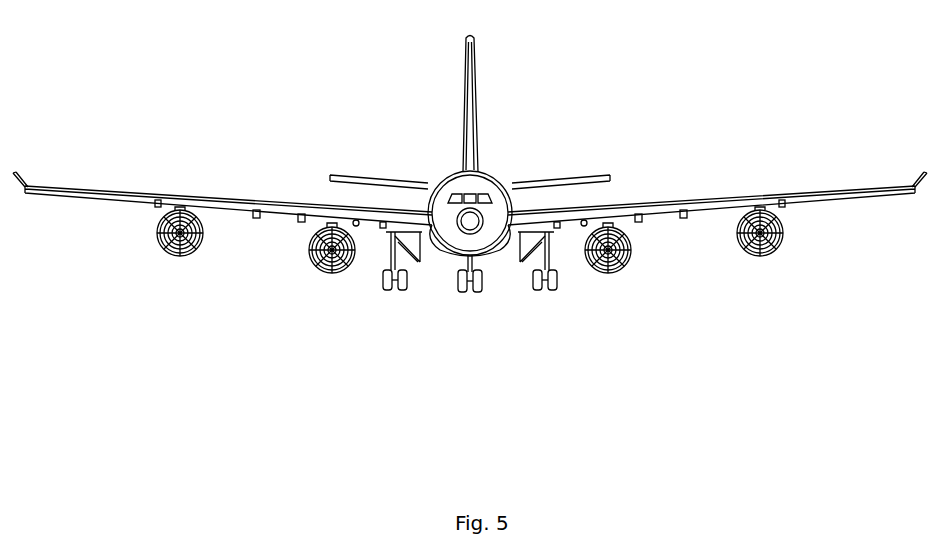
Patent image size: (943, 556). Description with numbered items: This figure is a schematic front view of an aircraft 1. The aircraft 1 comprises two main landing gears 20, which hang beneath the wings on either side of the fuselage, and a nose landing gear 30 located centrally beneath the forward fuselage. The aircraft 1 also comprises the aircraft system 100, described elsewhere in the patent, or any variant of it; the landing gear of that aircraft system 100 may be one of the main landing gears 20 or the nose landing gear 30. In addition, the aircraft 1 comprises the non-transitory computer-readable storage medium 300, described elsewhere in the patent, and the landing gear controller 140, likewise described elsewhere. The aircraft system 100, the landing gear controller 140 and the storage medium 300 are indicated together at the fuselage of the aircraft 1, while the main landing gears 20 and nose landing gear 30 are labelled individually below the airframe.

The aircraft 1 is at (470, 214).
The aircraft system 100 is at (412, 170).
The landing gear controller 140 is at (412, 170).
The non-transitory computer-readable storage medium 300 is at (442, 167).
The main landing gear 20 is at (398, 305).
The nose landing gear 30 is at (470, 305).